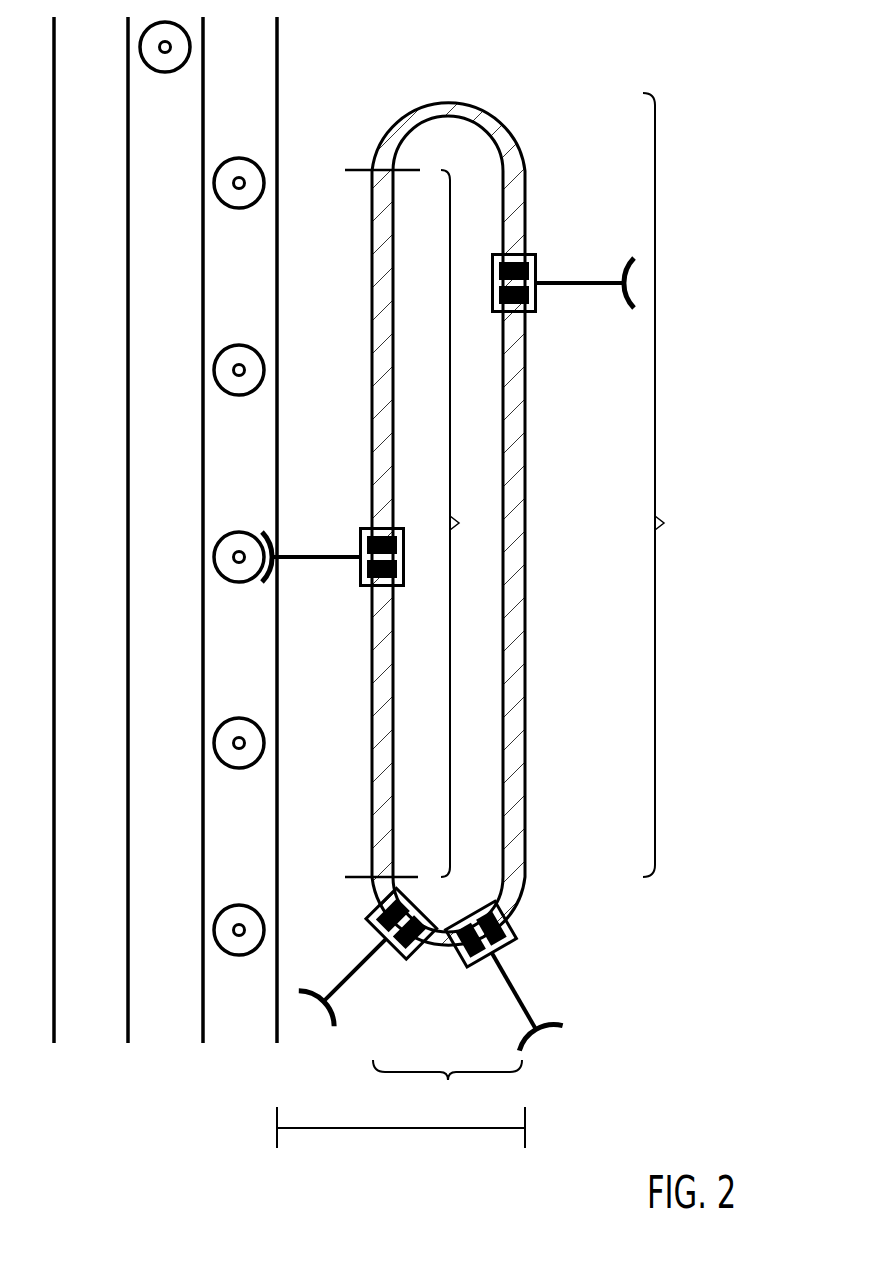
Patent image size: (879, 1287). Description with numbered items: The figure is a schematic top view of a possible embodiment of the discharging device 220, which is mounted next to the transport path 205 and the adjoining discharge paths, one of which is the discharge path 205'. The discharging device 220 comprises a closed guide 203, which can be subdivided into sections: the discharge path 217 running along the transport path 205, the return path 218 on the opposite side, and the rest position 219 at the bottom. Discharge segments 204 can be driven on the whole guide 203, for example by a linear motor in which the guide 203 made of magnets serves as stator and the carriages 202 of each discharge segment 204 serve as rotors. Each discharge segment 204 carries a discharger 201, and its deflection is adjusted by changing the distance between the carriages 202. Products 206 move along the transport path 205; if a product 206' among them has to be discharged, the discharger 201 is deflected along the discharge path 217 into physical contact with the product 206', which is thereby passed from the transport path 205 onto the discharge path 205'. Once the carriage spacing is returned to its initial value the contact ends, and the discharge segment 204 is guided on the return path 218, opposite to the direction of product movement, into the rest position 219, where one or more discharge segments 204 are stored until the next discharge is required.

The discharger 201 is at (337, 552).
The carriages 202 is at (397, 543).
The guide 203 is at (476, 88).
The discharge segment 204 is at (587, 300).
The transport path 205 is at (243, 564).
The discharge path 205' is at (165, 564).
The products 206 is at (238, 581).
The product to be discharged 206' is at (237, 579).
The discharge path section 217 is at (471, 523).
The return path section 218 is at (673, 485).
The rest position 219 is at (447, 1087).
The discharging device 220 is at (401, 1137).